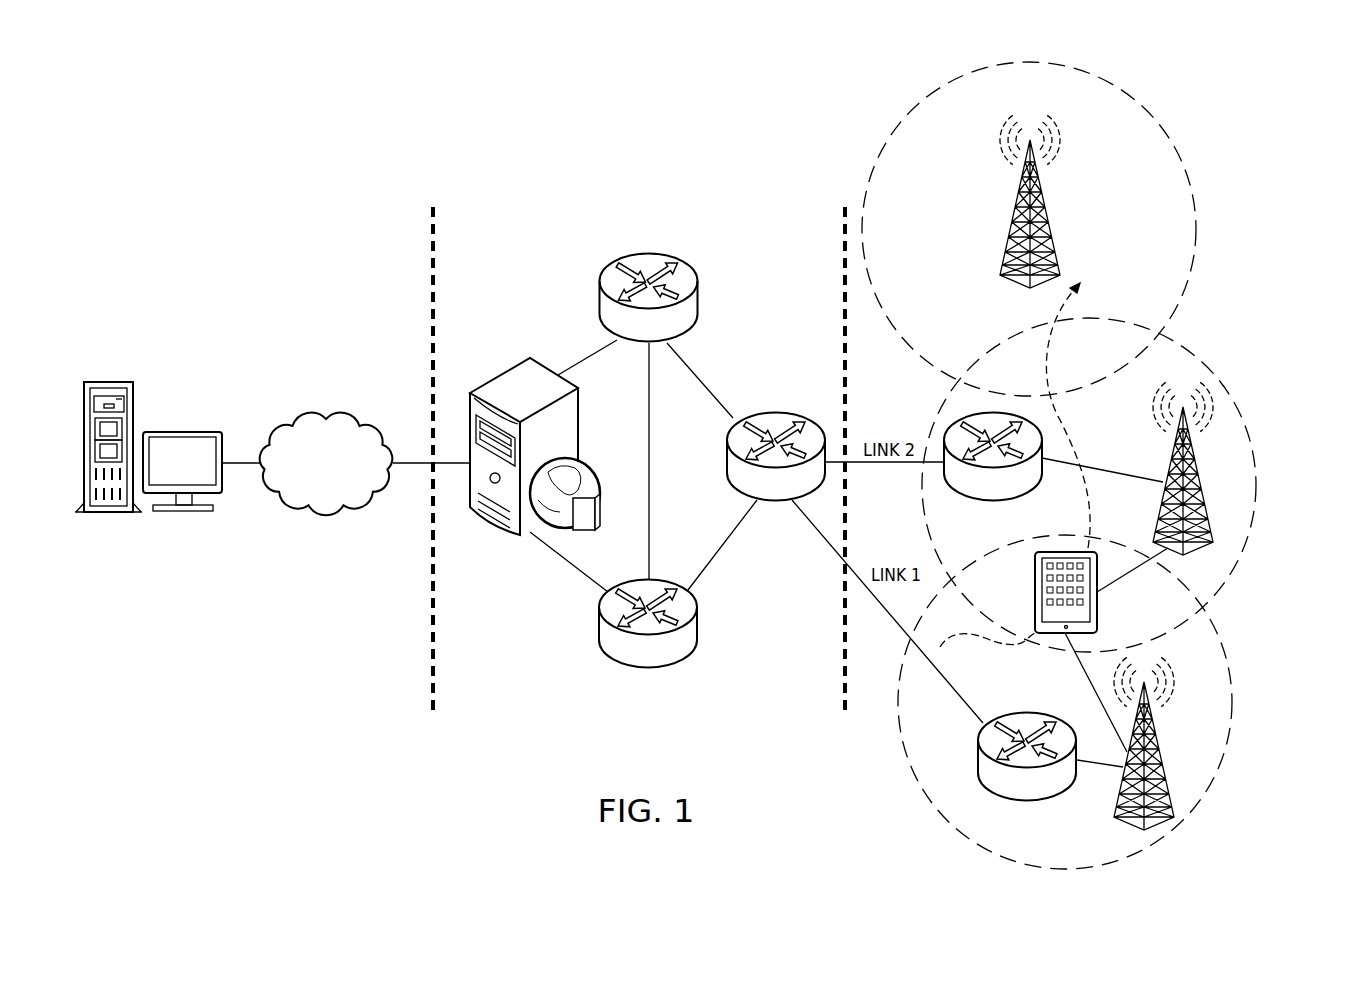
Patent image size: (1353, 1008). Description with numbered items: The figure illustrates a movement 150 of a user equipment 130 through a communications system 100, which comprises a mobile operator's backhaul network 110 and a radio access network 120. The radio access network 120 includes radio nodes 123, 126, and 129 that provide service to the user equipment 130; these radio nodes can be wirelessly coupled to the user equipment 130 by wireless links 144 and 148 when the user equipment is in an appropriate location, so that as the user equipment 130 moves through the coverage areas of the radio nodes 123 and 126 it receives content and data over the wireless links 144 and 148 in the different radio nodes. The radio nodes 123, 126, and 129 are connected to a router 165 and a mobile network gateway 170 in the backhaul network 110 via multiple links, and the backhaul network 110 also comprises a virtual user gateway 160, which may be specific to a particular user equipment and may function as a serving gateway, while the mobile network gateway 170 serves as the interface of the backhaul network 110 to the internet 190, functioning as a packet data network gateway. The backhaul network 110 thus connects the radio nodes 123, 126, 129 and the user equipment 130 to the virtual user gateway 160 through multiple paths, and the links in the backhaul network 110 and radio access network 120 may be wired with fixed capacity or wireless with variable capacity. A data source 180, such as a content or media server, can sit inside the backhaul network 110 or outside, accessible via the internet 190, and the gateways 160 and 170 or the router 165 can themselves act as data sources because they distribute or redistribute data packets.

The communications system 100 is at (158, 130).
The backhaul network 110 is at (512, 167).
The radio access network 120 is at (1255, 188).
The radio node 123 is at (1231, 388).
The radio node 126 is at (1188, 825).
The radio node 129 is at (1155, 111).
The user equipment 130 is at (1097, 610).
The wireless link 144 is at (1117, 578).
The wireless link 148 is at (1083, 670).
The movement 150 is at (1078, 433).
The virtual user gateway 160 is at (776, 412).
The router 165 is at (663, 256).
The mobile network gateway 170 is at (500, 375).
The data source 180 is at (108, 382).
The internet 190 is at (326, 414).